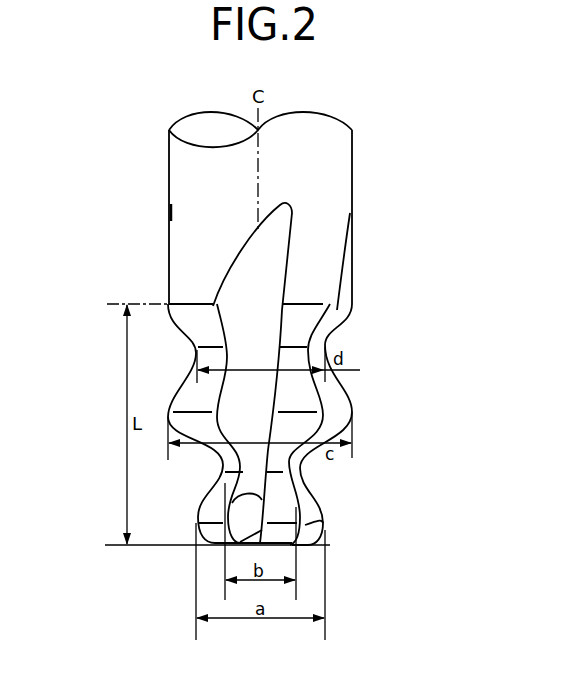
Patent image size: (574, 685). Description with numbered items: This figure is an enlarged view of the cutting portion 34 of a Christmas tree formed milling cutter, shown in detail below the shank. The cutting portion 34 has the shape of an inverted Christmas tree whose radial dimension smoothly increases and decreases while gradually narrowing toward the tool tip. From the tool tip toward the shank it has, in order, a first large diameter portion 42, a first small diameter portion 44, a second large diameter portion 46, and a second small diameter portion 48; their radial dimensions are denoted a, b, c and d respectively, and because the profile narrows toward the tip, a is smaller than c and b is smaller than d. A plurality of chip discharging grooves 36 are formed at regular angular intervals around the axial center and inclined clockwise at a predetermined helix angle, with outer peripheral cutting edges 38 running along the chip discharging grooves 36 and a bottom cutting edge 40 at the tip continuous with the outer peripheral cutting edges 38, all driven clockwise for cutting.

The cutting portion 34 is at (174, 574).
The chip discharging grooves 36 is at (247, 385).
The outer peripheral cutting edges 38 is at (232, 503).
The bottom cutting edge 40 is at (285, 547).
The first large diameter portion 42 is at (326, 527).
The first small diameter portion 44 is at (300, 468).
The second large diameter portion 46 is at (353, 413).
The second small diameter portion 48 is at (324, 345).